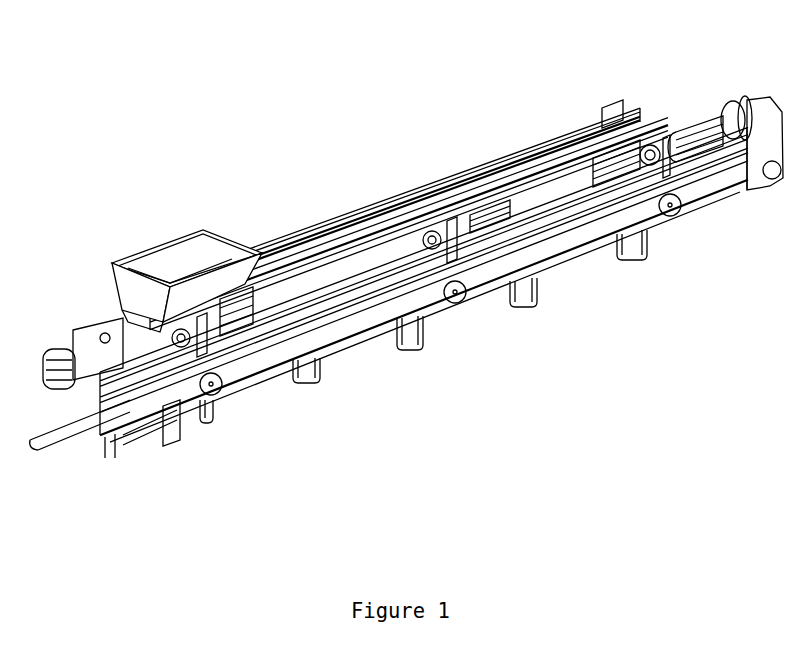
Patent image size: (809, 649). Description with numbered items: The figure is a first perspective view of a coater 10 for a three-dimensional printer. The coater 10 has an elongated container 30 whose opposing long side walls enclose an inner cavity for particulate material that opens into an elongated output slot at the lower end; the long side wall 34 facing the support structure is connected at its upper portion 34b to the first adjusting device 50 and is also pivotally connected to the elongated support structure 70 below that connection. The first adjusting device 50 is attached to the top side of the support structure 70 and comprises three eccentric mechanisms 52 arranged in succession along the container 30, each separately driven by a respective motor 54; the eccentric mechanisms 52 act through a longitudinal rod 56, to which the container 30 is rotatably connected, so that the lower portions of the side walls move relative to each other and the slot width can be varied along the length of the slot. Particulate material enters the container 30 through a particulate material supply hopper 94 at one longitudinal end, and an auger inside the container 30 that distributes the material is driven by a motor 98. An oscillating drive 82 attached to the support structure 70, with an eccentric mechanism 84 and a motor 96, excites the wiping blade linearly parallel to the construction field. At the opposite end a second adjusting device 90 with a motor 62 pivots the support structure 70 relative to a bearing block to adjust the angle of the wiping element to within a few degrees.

The coater 10 is at (146, 77).
The container 30 is at (421, 195).
The long side wall 34 is at (421, 195).
The upper portion 34b is at (287, 290).
The first adjusting device 50 is at (354, 200).
The eccentric mechanisms 52 is at (140, 292).
The motor 54 is at (222, 312).
The longitudinal rod 56 is at (345, 267).
The motor 62 is at (707, 112).
The support structure 70 is at (483, 277).
The oscillating drive 82 is at (365, 348).
The eccentric mechanism 84 is at (213, 417).
The second adjusting device 90 is at (725, 116).
The particulate material supply hopper 94 is at (132, 296).
The motor 96 is at (155, 452).
The motor 98 is at (83, 364).